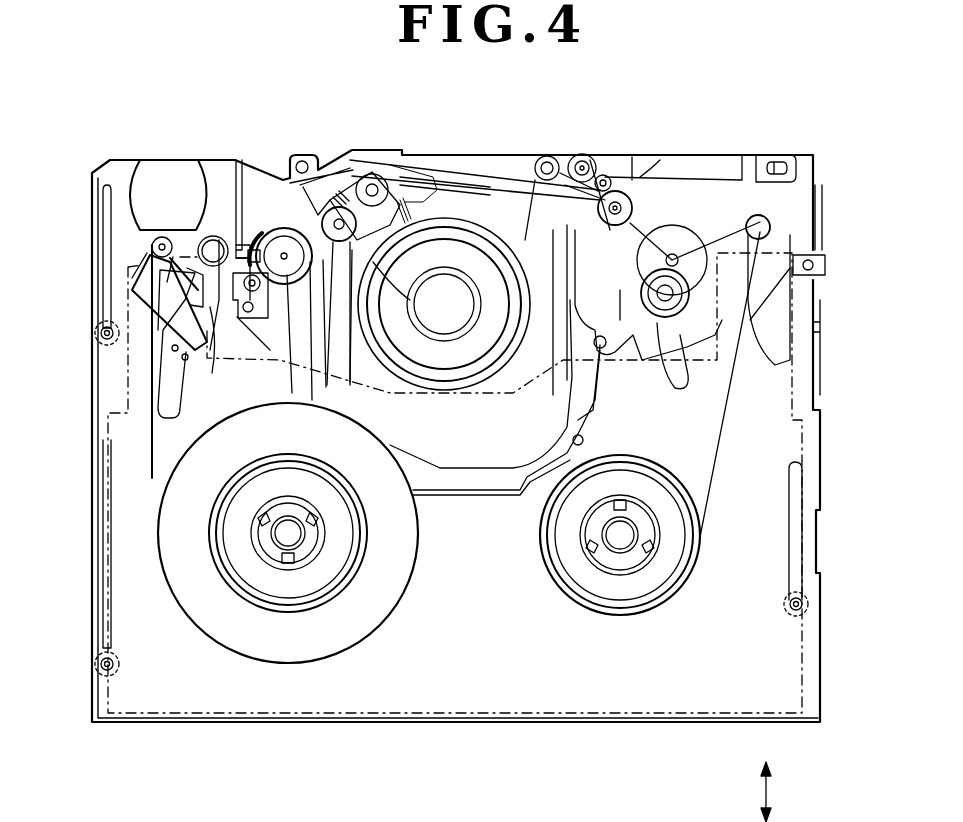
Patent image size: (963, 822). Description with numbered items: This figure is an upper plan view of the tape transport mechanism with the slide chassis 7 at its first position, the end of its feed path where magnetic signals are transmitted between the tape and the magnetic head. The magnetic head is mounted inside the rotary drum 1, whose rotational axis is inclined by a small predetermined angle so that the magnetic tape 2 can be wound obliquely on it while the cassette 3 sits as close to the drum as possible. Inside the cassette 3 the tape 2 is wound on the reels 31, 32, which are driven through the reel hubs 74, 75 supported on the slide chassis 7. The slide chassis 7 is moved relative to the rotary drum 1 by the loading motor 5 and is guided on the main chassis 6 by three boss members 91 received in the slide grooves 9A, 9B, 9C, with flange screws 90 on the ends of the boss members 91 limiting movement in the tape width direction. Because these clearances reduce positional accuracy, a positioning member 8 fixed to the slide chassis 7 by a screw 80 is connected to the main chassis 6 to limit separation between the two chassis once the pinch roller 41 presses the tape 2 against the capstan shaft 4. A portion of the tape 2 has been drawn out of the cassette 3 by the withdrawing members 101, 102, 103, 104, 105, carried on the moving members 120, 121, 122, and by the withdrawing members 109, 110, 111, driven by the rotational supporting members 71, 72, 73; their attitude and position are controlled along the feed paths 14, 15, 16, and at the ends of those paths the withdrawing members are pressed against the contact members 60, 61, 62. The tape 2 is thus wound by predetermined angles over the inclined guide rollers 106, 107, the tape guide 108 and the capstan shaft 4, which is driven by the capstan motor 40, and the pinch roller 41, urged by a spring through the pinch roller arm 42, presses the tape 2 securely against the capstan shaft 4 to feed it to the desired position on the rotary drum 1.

The rotary drum 1 is at (495, 215).
The magnetic tape 2 is at (470, 245).
The cassette 3 is at (778, 441).
The capstan shaft 4 is at (720, 195).
The loading motor 5 is at (135, 185).
The main chassis 6 is at (248, 168).
The slide chassis 7 is at (462, 690).
The positioning member 8 is at (822, 283).
The slide groove 9A is at (795, 493).
The slide groove 9B is at (108, 570).
The slide groove 9C is at (110, 265).
The feed path 14 is at (292, 372).
The feed path 15 is at (528, 200).
The feed path 16 is at (555, 160).
The reel 31 is at (310, 655).
The reel 32 is at (640, 585).
The capstan motor 40 is at (737, 180).
The pinch roller 41 is at (658, 362).
The pinch roller arm 42 is at (687, 380).
The contact member 60 is at (325, 195).
The contact member 61 is at (376, 175).
The contact member 62 is at (580, 165).
The rotational supporting member 71 is at (183, 393).
The rotational supporting member 72 is at (212, 356).
The rotational supporting member 73 is at (790, 268).
The reel hub 74 is at (278, 543).
The reel hub 75 is at (618, 545).
The screw 80 is at (825, 265).
The flange screw 90 is at (101, 333).
The boss member 91 is at (105, 356).
The withdrawing member 101 is at (400, 292).
The withdrawing member 102 is at (240, 318).
The withdrawing member 103 is at (437, 210).
The withdrawing member 104 is at (368, 240).
The withdrawing member 105 is at (610, 190).
The inclined guide roller 106 is at (283, 254).
The inclined guide roller 107 is at (250, 250).
The tape guide 108 is at (667, 282).
The withdrawing member 109 is at (213, 246).
The withdrawing member 110 is at (163, 245).
The withdrawing member 111 is at (760, 230).
The moving member 120 is at (350, 300).
The moving member 121 is at (412, 190).
The moving member 122 is at (627, 212).